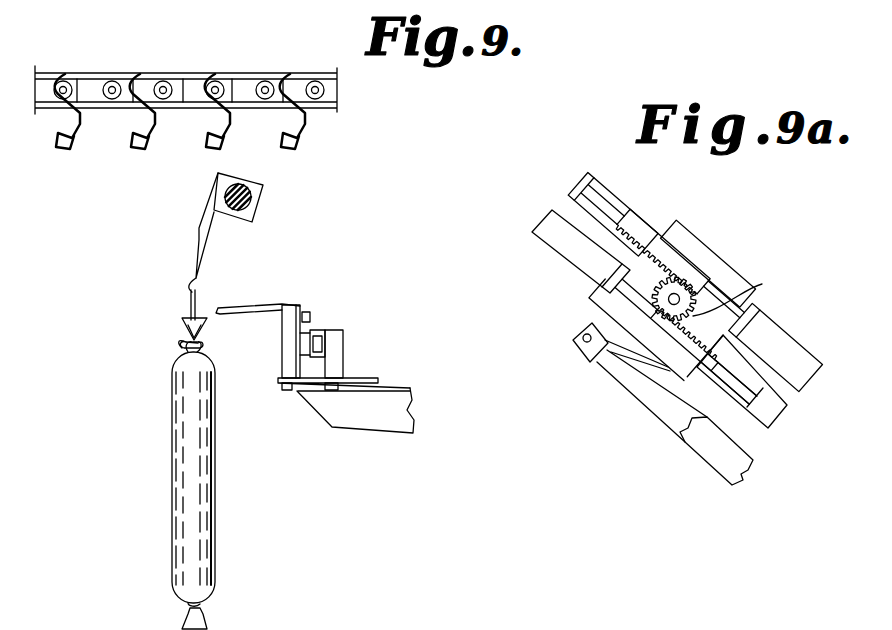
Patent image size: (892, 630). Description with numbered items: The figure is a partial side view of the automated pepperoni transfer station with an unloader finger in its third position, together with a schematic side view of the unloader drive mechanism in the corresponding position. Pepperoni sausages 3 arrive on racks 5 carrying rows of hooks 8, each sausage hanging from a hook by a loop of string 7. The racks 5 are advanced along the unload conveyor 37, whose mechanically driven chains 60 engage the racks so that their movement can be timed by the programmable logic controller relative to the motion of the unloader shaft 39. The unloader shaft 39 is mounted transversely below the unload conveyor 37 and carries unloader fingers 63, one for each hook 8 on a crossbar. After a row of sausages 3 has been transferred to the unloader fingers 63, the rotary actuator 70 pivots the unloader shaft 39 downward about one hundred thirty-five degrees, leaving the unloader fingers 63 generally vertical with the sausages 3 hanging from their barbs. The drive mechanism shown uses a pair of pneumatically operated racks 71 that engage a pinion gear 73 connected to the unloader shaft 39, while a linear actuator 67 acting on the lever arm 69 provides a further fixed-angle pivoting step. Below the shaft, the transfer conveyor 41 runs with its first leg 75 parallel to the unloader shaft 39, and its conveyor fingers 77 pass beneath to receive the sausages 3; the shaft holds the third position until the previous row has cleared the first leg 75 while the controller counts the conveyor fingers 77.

In FIG. 9, the pepperoni sausage 3 is at (172, 461).
In FIG. 9, the rack 5 is at (146, 72).
In FIG. 9, the loop of string 7 is at (188, 298).
In FIG. 9, the hook 8 is at (302, 143).
In FIG. 9, the unload conveyor 37 is at (207, 109).
In FIG. 9, the unloader shaft 39 is at (252, 194).
In FIG. 9, the transfer conveyor 41 is at (292, 394).
In FIG. 9, the drive chain 60 is at (338, 96).
In FIG. 9, the unloader finger 63 is at (212, 233).
In FIG. 9A, the linear actuator 67 is at (686, 441).
In FIG. 9A, the lever arm 69 is at (592, 324).
In FIG. 9A, the rotary actuator 70 is at (733, 267).
In FIG. 9A, the rack 71 is at (642, 228).
In FIG. 9A, the pinion gear 73 is at (762, 285).
In FIG. 9, the first leg 75 is at (343, 350).
In FIG. 9, the conveyor finger 77 is at (226, 307).